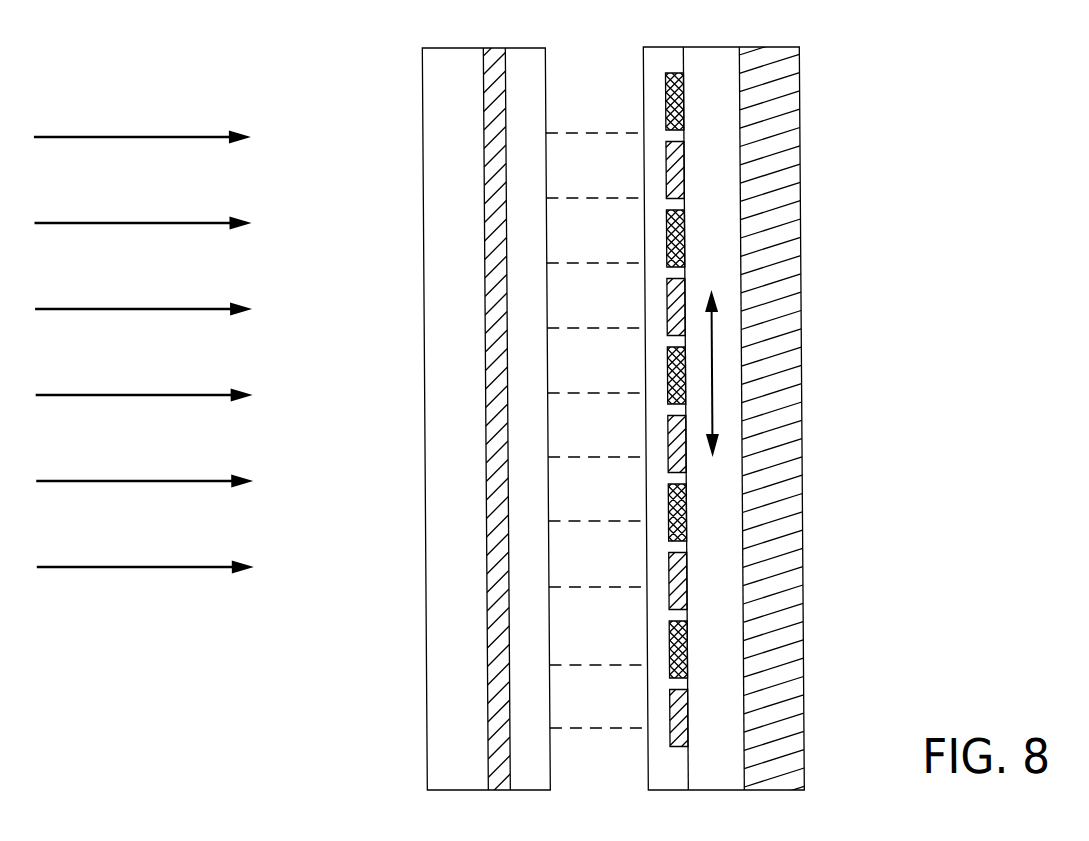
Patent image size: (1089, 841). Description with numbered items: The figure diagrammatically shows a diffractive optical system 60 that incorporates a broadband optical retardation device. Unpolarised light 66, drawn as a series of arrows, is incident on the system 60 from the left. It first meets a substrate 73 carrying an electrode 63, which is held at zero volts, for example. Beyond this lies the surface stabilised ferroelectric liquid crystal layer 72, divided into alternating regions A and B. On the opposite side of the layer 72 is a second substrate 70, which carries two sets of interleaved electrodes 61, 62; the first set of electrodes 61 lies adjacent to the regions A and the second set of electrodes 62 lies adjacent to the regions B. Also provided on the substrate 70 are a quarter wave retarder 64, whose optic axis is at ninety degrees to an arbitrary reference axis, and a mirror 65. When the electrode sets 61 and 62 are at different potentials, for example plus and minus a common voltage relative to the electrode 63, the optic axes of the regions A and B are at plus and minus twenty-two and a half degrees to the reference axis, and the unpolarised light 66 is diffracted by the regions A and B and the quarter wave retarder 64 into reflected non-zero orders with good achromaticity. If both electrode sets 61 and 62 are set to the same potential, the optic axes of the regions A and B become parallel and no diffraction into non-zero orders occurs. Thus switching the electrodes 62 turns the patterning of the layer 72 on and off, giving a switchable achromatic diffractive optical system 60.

The diffractive optical system 60 is at (782, 420).
The first set of interleaved electrodes 61 is at (683, 104).
The second set of interleaved electrodes 62 is at (683, 172).
The electrode 63 is at (505, 95).
The quarter wave retarder 64 is at (712, 783).
The mirror 65 is at (766, 790).
The unpolarised light 66 is at (124, 136).
The substrate 70 is at (702, 47).
The surface stabilised ferroelectric liquid crystal layer 72 is at (593, 776).
The substrate 73 is at (450, 48).